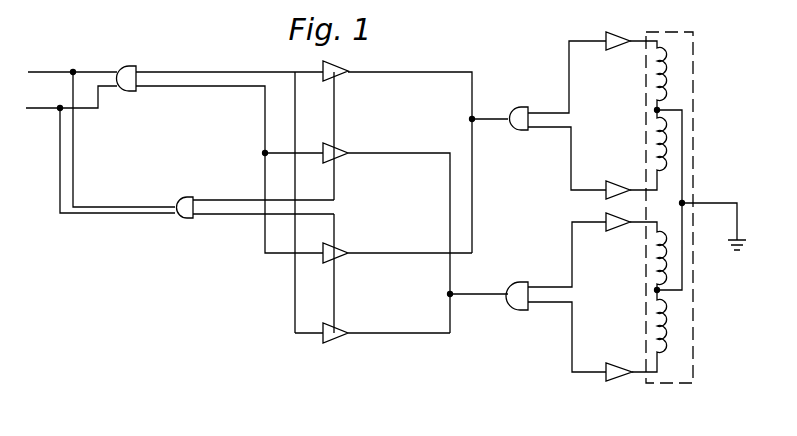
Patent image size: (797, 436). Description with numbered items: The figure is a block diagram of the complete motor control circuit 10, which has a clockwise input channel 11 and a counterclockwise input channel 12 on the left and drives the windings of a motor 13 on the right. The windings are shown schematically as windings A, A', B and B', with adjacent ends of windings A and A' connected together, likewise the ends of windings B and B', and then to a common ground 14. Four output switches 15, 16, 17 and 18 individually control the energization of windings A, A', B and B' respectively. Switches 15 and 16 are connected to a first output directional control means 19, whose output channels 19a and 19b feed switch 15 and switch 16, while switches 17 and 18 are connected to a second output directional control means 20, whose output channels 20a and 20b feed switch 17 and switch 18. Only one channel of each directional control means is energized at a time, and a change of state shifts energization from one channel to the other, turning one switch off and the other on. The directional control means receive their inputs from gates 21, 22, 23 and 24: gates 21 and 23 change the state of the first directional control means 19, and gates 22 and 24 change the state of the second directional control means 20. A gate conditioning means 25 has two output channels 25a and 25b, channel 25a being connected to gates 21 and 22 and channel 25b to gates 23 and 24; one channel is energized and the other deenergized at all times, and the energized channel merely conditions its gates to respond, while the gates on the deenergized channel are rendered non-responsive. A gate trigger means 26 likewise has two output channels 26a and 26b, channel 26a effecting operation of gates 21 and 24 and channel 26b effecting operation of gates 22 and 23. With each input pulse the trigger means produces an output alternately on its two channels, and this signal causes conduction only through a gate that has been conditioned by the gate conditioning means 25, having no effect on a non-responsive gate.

The motor control circuit 10 is at (226, 305).
The clockwise input channel 11 is at (48, 72).
The counterclockwise input channel 12 is at (48, 108).
The motor 13 is at (677, 375).
The common ground 14 is at (733, 239).
The output switch 15 is at (617, 36).
The output switch 16 is at (618, 181).
The output switch 17 is at (617, 231).
The output switch 18 is at (612, 380).
The first output directional control means 19 is at (518, 107).
The output channel 19a is at (545, 109).
The output channel 19b is at (543, 130).
The second output directional control means 20 is at (512, 306).
The output channel 20a is at (546, 282).
The output channel 20b is at (547, 307).
The gate 21 is at (340, 64).
The gate 22 is at (343, 144).
The gate 23 is at (340, 257).
The gate 24 is at (337, 337).
The gate conditioning means 25 is at (185, 219).
The output channel 25a is at (222, 198).
The output channel 25b is at (217, 218).
The gate trigger means 26 is at (130, 93).
The output channel 26a is at (210, 69).
The output channel 26b is at (208, 88).
The winding A is at (679, 77).
The winding A' is at (678, 150).
The winding B is at (672, 257).
The winding B' is at (679, 331).